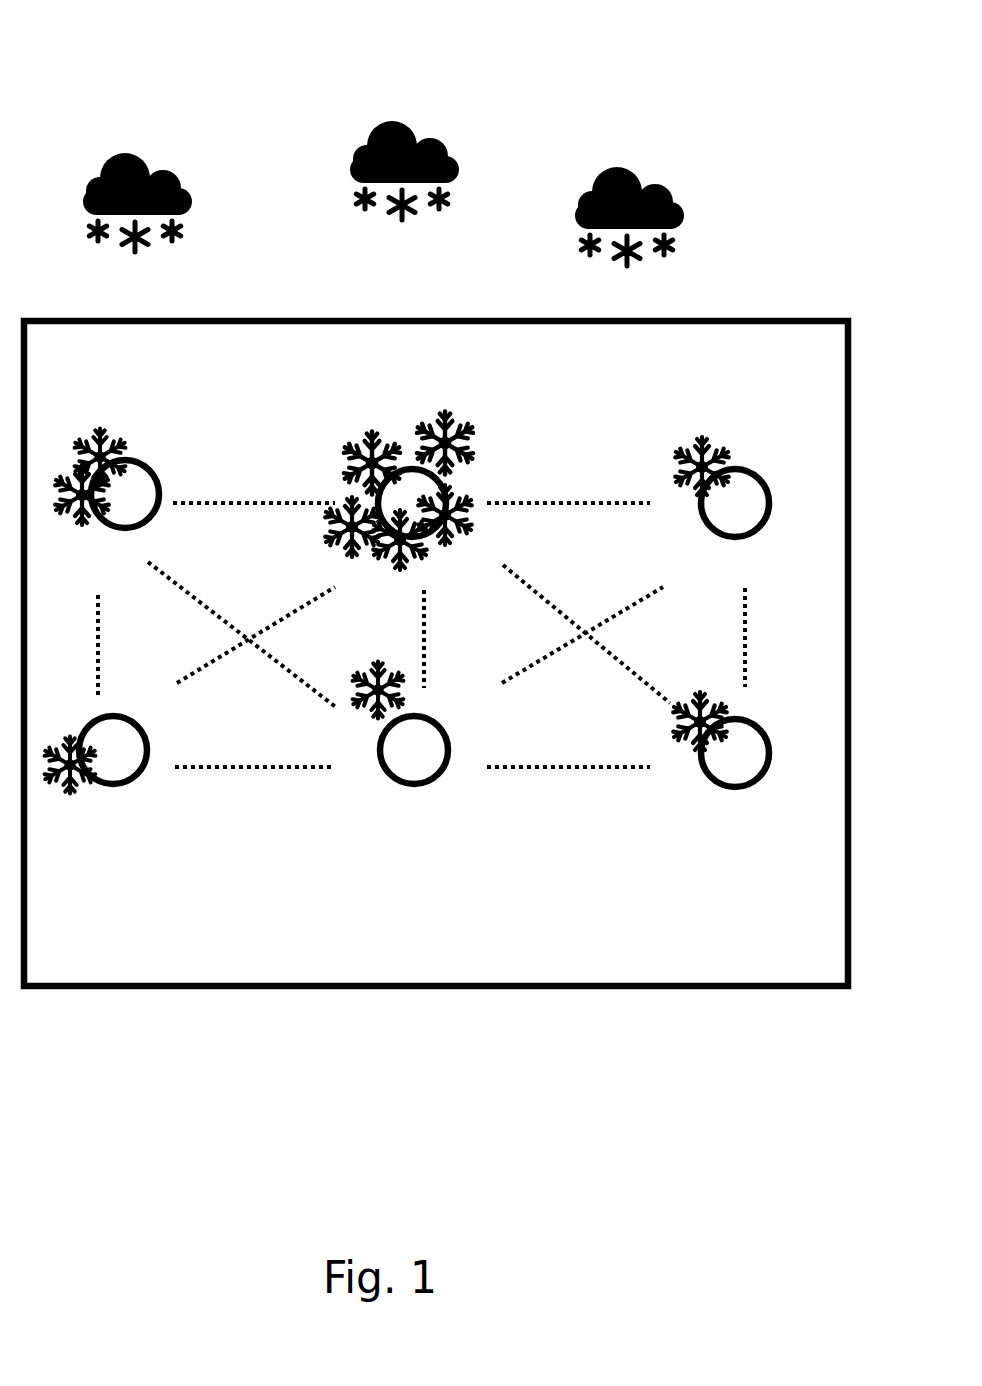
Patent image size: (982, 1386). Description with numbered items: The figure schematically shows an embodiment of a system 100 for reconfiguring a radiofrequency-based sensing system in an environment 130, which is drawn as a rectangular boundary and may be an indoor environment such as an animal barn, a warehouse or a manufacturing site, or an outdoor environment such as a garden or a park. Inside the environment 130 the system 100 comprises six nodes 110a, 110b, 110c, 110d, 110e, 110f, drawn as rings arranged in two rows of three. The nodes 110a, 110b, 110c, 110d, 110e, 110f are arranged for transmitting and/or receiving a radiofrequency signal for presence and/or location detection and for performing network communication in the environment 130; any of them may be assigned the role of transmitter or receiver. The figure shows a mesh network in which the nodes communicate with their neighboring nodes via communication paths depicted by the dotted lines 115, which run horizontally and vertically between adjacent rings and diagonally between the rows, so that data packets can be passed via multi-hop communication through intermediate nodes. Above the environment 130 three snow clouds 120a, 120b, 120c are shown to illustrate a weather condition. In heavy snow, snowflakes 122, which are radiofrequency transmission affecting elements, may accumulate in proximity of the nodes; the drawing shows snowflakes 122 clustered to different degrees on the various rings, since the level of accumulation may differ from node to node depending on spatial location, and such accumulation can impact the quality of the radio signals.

The system 100 is at (436, 727).
The node 110a is at (153, 462).
The node 110b is at (383, 457).
The node 110c is at (750, 458).
The node 110d is at (108, 797).
The node 110e is at (415, 797).
The node 110f is at (725, 797).
The dotted lines 115 is at (608, 502).
The snow cloud 120a is at (197, 200).
The snow cloud 120b is at (427, 115).
The snow cloud 120c is at (697, 225).
The snowflakes 122 is at (352, 503).
The environment 130 is at (587, 992).